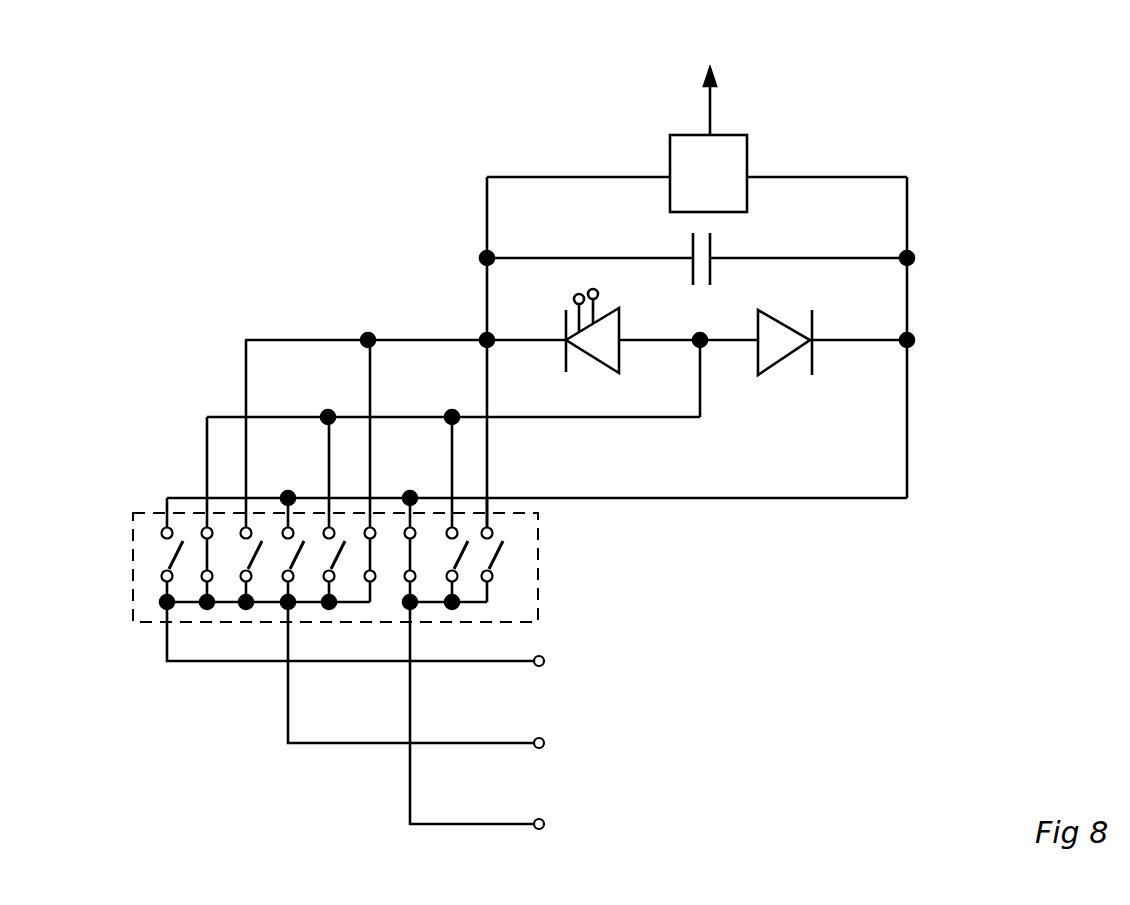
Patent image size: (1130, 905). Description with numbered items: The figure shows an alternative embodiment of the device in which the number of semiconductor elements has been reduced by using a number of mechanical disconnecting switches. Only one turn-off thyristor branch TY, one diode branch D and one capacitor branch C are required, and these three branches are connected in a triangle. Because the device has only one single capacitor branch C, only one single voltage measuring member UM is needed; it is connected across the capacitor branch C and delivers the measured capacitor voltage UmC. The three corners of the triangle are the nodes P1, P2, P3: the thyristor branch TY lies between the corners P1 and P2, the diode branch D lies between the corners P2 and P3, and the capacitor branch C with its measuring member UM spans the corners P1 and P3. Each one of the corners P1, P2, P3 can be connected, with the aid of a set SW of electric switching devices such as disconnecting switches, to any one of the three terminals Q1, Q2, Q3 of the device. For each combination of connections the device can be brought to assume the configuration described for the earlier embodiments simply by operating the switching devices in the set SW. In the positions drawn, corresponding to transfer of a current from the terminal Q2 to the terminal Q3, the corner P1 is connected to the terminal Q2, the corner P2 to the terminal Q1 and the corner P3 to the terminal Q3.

The voltage measuring member UM is at (722, 144).
The measured capacitor voltage UmC is at (714, 83).
The capacitor branch C is at (717, 245).
The turn-off thyristor branch TY is at (587, 365).
The diode branch D is at (785, 367).
The first corner of the triangle P1 is at (473, 325).
The second corner of the triangle P2 is at (690, 350).
The third corner of the triangle P3 is at (920, 333).
The set of electric switching devices SW is at (527, 600).
The first terminal Q1 is at (550, 661).
The second terminal Q2 is at (550, 743).
The third terminal Q3 is at (550, 824).